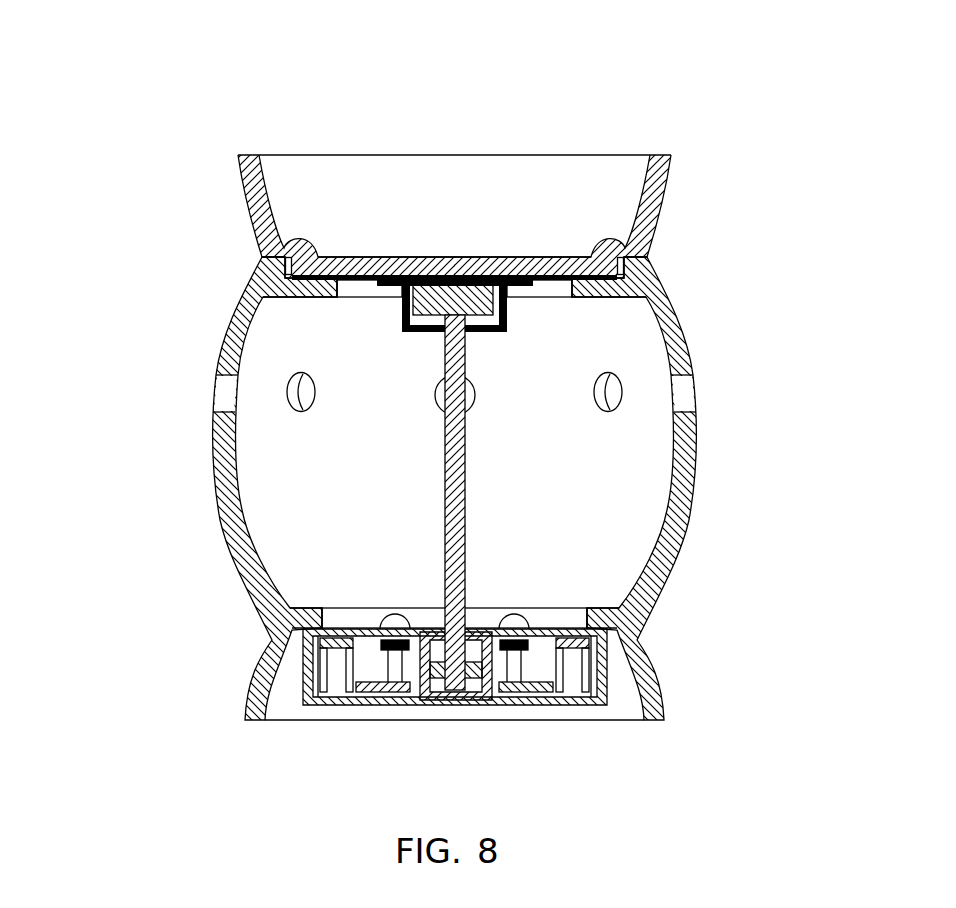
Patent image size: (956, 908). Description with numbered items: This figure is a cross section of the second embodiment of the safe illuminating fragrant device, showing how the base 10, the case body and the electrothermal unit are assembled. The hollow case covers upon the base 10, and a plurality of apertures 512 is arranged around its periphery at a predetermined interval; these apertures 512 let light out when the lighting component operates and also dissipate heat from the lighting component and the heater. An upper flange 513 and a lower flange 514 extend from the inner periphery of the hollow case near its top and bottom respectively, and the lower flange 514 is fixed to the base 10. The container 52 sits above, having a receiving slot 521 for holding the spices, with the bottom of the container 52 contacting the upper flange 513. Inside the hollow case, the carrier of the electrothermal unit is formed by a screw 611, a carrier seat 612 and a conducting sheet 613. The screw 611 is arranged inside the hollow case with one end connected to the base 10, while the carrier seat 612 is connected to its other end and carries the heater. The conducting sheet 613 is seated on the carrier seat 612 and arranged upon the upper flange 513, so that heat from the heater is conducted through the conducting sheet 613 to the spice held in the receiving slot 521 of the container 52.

The base 10 is at (288, 696).
The container 52 is at (246, 199).
The receiving slot 521 is at (468, 185).
The apertures 512 is at (683, 392).
The upper flange 513 is at (308, 300).
The lower flange 514 is at (317, 607).
The screw 611 is at (445, 490).
The carrier seat 612 is at (402, 320).
The conducting sheet 613 is at (543, 280).